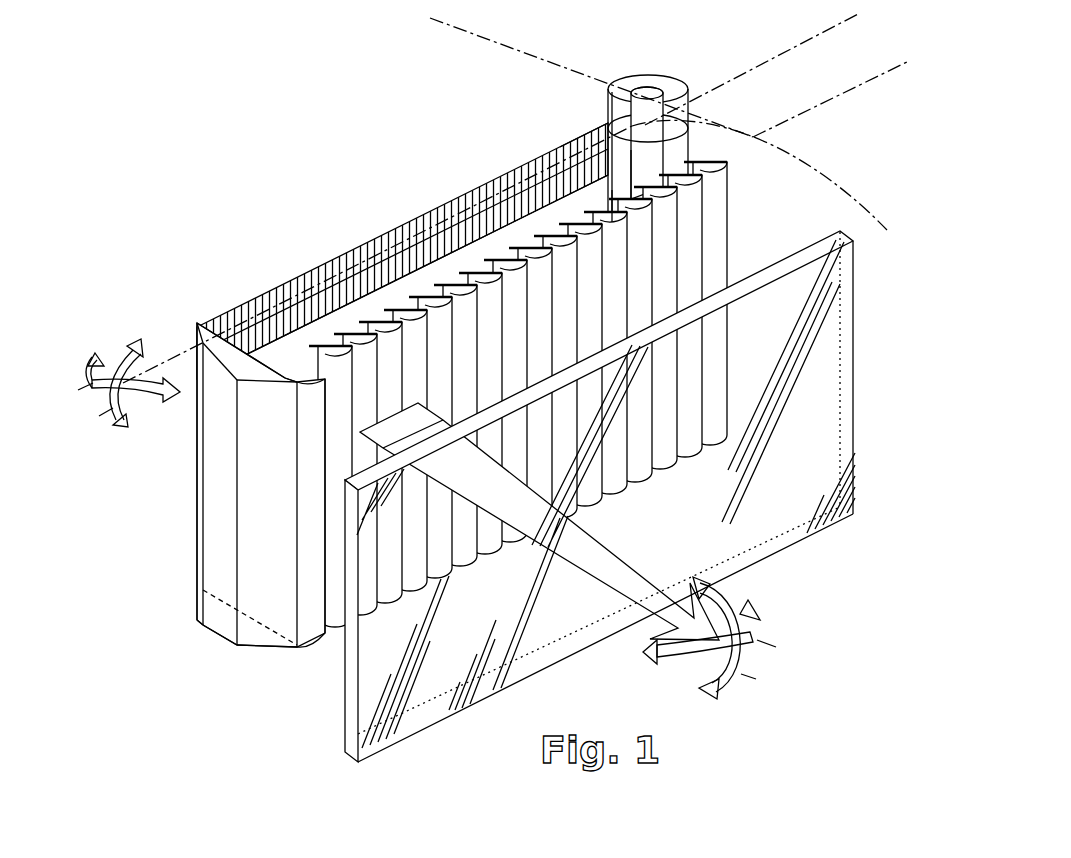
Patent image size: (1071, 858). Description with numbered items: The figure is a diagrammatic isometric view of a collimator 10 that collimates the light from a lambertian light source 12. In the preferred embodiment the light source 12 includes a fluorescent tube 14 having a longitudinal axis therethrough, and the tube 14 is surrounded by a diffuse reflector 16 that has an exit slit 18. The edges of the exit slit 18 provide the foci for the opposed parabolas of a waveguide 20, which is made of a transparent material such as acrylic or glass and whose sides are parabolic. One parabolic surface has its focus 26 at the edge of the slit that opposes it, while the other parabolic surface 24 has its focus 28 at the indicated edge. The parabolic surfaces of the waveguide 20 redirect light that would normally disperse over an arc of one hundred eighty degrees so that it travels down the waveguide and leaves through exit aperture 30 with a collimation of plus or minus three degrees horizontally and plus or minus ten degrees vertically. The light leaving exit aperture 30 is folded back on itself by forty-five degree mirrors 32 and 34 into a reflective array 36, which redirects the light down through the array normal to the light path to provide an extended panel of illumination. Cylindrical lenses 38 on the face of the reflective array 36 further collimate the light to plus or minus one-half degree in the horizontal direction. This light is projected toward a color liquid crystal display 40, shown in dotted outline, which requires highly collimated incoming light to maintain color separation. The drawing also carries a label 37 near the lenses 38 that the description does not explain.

The illumination system 10 is at (480, 387).
The lamp housing 12 is at (680, 127).
The lamp 14 is at (644, 115).
The housing interior 16 is at (680, 116).
The lamp lower portion 18 is at (633, 167).
The reflector hood 20 is at (402, 238).
The slot 24 is at (490, 237).
The scan arc 26 is at (690, 142).
The hood edge 28 is at (606, 124).
The prism 30 is at (241, 475).
The prism side face 32 is at (210, 416).
The prism front face 34 is at (282, 431).
The prism curved face 36 is at (336, 378).
The gap 37 is at (612, 192).
The cylindrical lenses 38 is at (692, 218).
The diffuser panel 40 is at (853, 286).